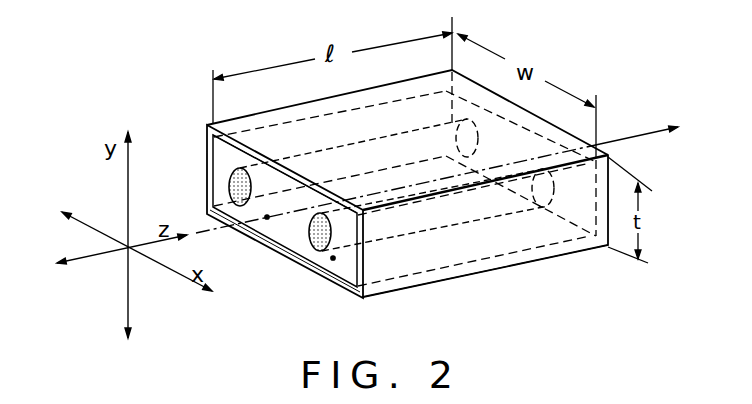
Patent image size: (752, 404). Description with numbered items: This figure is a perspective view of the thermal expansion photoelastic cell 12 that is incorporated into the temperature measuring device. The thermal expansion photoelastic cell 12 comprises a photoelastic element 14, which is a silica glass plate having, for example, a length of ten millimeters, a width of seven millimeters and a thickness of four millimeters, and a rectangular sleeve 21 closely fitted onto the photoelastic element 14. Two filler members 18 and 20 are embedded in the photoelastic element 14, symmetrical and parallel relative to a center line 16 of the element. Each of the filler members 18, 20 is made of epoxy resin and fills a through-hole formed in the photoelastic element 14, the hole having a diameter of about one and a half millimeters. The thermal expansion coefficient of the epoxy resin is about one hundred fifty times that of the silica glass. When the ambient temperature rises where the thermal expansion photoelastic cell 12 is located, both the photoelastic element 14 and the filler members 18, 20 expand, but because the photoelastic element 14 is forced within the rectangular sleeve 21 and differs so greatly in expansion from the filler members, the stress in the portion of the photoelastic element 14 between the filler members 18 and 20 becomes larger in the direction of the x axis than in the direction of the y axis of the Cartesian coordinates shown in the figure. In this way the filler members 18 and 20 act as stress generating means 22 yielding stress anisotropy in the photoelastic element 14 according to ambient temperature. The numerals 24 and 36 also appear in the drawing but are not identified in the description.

The thermal expansion photoelastic cell 12 is at (521, 266).
The photoelastic element 14 is at (283, 238).
The center line 16 is at (266, 218).
The filler member 18 is at (230, 194).
The filler member 20 is at (323, 250).
The rectangular sleeve 21 is at (426, 258).
The stress generating means 22 is at (333, 259).
The top wall 24 is at (273, 187).
The end wall 36 is at (492, 88).